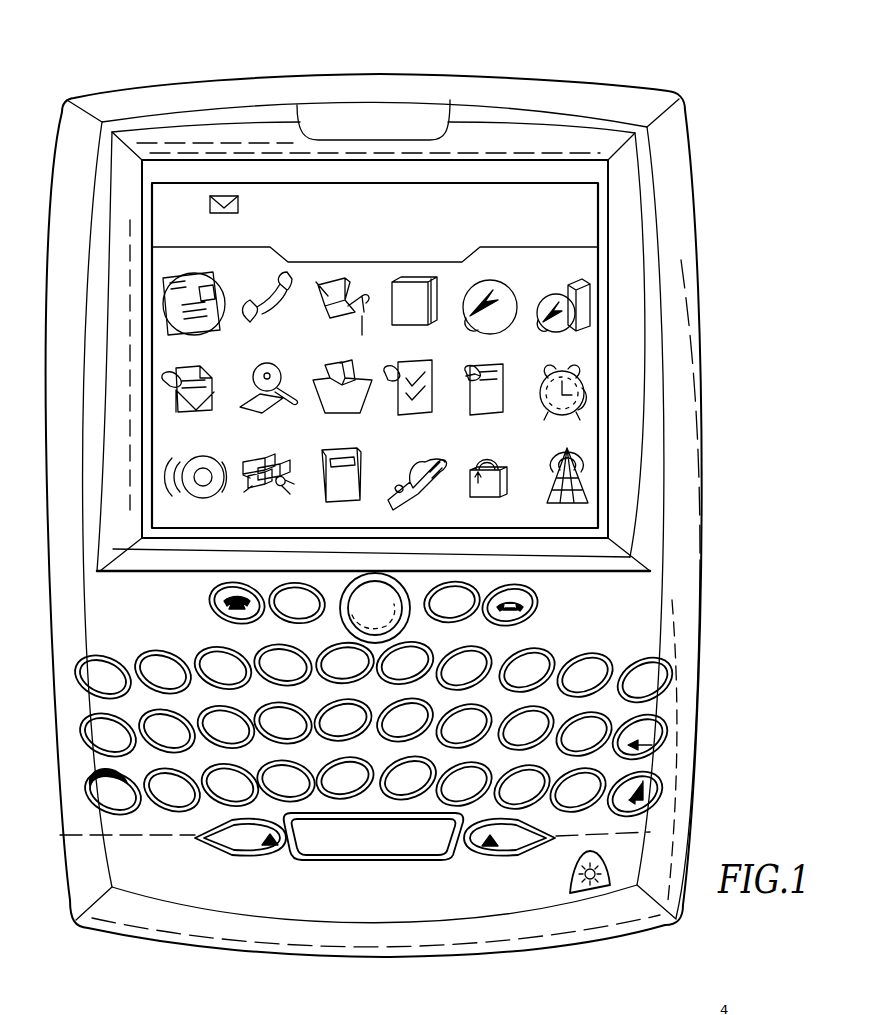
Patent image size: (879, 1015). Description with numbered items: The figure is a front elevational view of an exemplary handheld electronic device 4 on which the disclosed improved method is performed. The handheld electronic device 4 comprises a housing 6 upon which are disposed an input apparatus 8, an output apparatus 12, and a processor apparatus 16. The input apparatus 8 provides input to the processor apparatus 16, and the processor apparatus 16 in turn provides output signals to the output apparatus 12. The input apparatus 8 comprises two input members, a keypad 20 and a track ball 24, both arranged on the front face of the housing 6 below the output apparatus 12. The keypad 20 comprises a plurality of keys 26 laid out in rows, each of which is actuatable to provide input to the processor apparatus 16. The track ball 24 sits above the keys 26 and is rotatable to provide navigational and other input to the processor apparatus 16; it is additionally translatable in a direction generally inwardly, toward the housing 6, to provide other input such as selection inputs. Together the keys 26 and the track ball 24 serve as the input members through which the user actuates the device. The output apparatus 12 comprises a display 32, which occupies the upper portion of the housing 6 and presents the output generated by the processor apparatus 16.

The handheld electronic device 4 is at (492, 71).
The housing 6 is at (693, 148).
The input apparatus 8 is at (412, 582).
The output apparatus 12 is at (573, 213).
The processor apparatus 16 is at (240, 881).
The keypad 20 is at (670, 705).
The track ball 24 is at (395, 617).
The keys 26 is at (158, 652).
The display 32 is at (522, 205).